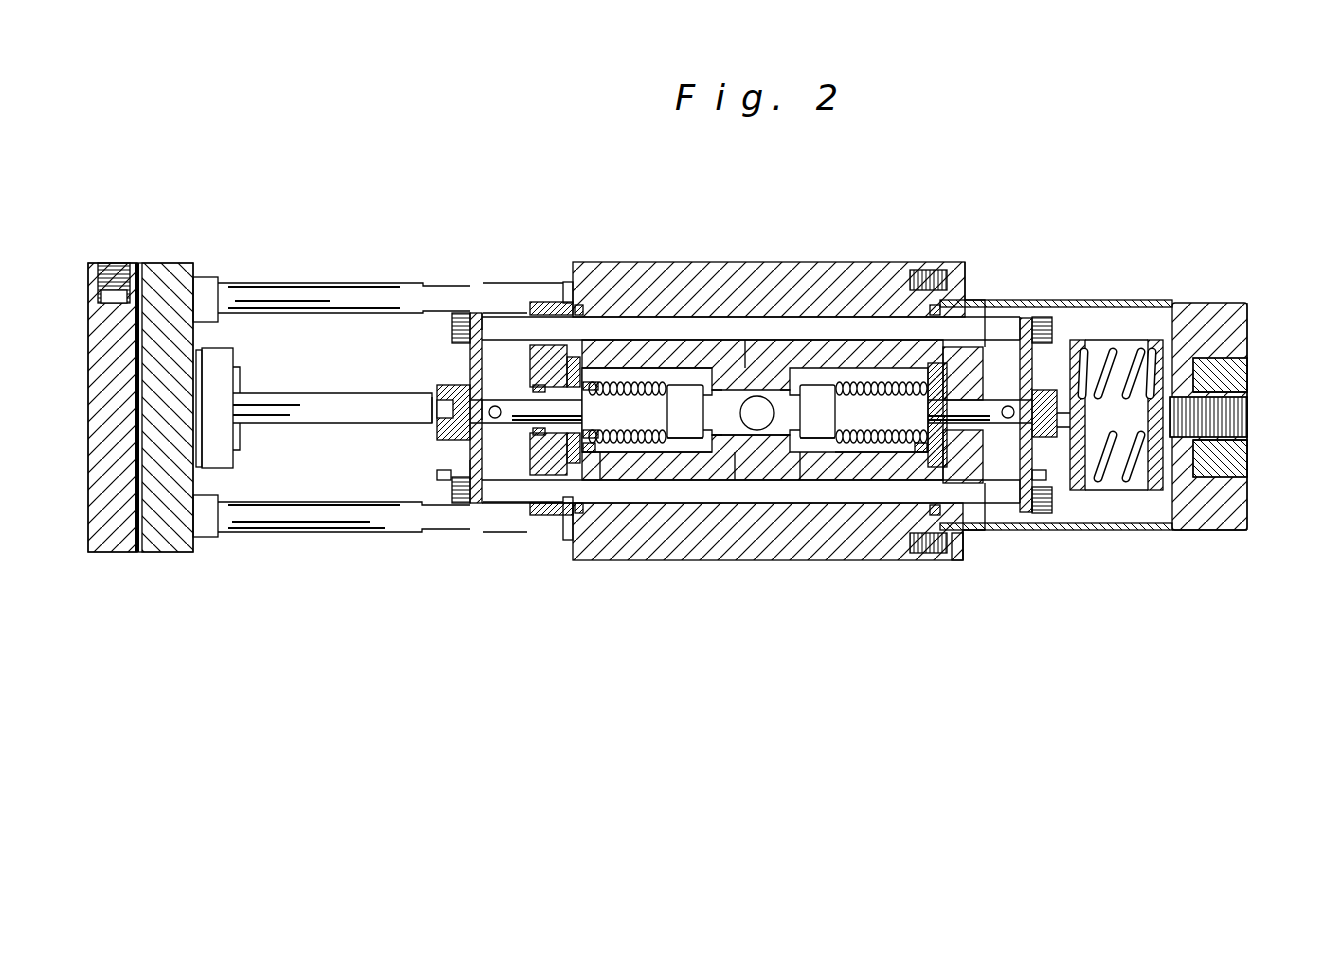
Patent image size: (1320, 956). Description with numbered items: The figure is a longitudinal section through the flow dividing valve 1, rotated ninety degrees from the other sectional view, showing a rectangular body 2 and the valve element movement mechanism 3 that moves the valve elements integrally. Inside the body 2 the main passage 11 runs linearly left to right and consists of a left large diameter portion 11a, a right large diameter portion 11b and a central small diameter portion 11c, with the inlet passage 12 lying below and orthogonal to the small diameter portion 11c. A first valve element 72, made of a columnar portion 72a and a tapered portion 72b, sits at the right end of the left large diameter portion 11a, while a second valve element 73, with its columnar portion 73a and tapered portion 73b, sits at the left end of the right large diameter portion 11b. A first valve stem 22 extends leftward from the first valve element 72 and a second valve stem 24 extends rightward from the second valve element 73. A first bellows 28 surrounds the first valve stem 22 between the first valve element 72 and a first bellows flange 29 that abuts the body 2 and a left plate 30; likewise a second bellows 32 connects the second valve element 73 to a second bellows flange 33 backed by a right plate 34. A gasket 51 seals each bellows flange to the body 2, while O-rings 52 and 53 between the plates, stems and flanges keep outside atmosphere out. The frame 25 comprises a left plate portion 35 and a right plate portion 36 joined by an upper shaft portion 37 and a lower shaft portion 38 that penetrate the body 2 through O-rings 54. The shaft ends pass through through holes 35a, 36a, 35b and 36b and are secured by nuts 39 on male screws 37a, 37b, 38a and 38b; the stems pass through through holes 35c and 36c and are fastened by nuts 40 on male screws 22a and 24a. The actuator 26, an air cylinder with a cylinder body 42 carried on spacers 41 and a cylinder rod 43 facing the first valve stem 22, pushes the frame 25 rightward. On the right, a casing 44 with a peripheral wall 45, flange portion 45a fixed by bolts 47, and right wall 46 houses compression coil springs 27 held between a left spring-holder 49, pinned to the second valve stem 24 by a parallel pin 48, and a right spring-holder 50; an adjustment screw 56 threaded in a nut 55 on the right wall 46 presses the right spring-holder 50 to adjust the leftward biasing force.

The flow dividing valve 1 is at (1168, 205).
The body 2 is at (680, 262).
The valve element movement mechanism 3 is at (163, 255).
The main passage 11 is at (620, 445).
The left large diameter portion 11a is at (655, 452).
The right large diameter portion 11b is at (800, 455).
The small diameter portion 11c is at (735, 440).
The inlet passage 12 is at (760, 398).
The first valve stem 22 is at (640, 388).
The male screw 22a is at (435, 385).
The second valve stem 24 is at (850, 470).
The male screw 24a is at (1100, 490).
The frame 25 is at (1077, 340).
The actuator 26 is at (310, 383).
The compression coil spring 27 is at (1210, 365).
The first bellows 28 is at (620, 385).
The first bellows flange 29 is at (572, 357).
The left plate 30 is at (540, 345).
The second bellows 32 is at (935, 380).
The second bellows flange 33 is at (870, 385).
The right plate 34 is at (975, 532).
The left plate portion 35 is at (470, 340).
The through hole 35a is at (480, 318).
The through hole 35b is at (478, 470).
The through hole 35c is at (490, 424).
The right plate portion 36 is at (1025, 480).
The through hole 36a is at (1022, 330).
The through hole 36b is at (1020, 500).
The through hole 36c is at (1030, 515).
The upper shaft portion 37 is at (745, 340).
The male screw 37a is at (500, 322).
The male screw 37b is at (1050, 330).
The lower shaft portion 38 is at (735, 470).
The male screw 38a is at (445, 478).
The male screw 38b is at (1060, 470).
The nut 39 is at (460, 313).
The nut 40 is at (440, 420).
The spacer 41 is at (247, 283).
The cylinder body 42 is at (180, 263).
The cylinder rod 43 is at (310, 425).
The casing 44 is at (1200, 303).
The peripheral wall 45 is at (1155, 340).
The flange portion 45a is at (950, 302).
The right wall 46 is at (1247, 310).
The bolt 47 is at (958, 548).
The parallel pin 48 is at (1220, 395).
The left spring-holder 49 is at (1120, 360).
The right spring-holder 50 is at (1240, 525).
The gasket 51 is at (588, 452).
The O-ring 52 is at (985, 330).
The O-ring 53 is at (938, 318).
The O-ring 54 is at (565, 302).
The nut 55 is at (1220, 445).
The adjustment screw 56 is at (1210, 415).
The first valve element 72 is at (690, 395).
The columnar portion 72a is at (716, 393).
The tapered portion 72b is at (695, 440).
The second valve element 73 is at (815, 400).
The columnar portion 73a is at (785, 438).
The tapered portion 73b is at (750, 455).